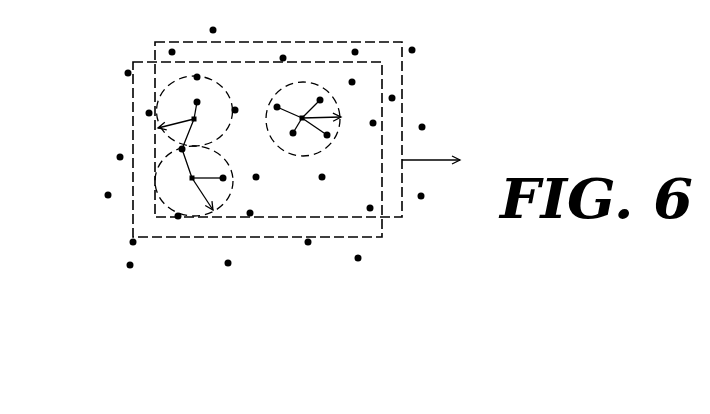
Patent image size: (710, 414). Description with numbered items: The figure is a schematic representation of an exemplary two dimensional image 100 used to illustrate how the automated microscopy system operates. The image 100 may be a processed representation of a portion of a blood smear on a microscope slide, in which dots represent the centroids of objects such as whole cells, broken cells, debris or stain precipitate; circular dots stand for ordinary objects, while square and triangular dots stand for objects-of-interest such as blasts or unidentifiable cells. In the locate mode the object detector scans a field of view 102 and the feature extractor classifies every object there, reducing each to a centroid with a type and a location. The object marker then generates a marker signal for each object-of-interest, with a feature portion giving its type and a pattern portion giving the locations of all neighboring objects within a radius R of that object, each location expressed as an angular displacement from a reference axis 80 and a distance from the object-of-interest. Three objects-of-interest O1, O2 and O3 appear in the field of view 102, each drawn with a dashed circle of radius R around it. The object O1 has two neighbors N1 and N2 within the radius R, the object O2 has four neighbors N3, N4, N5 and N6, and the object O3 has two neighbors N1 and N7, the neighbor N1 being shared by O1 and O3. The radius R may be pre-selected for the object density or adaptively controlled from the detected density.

The two dimensional image 100 is at (402, 83).
The field of view 102 is at (243, 237).
The reference axis 80 is at (418, 159).
The object-of-interest O1 is at (190, 178).
The object-of-interest O2 is at (302, 118).
The object-of-interest O3 is at (197, 118).
The radius R is at (185, 119).
The neighboring object N1 is at (185, 148).
The neighboring object N2 is at (227, 170).
The neighboring object N3 is at (277, 104).
The neighboring object N4 is at (320, 100).
The neighboring object N5 is at (327, 135).
The neighboring object N6 is at (293, 134).
The neighboring object N7 is at (197, 102).